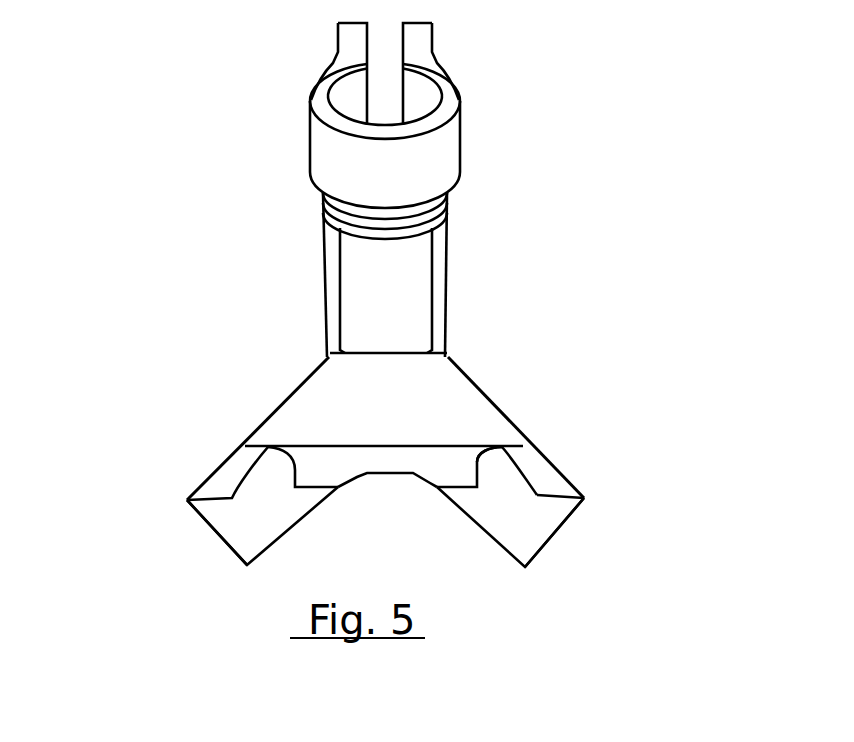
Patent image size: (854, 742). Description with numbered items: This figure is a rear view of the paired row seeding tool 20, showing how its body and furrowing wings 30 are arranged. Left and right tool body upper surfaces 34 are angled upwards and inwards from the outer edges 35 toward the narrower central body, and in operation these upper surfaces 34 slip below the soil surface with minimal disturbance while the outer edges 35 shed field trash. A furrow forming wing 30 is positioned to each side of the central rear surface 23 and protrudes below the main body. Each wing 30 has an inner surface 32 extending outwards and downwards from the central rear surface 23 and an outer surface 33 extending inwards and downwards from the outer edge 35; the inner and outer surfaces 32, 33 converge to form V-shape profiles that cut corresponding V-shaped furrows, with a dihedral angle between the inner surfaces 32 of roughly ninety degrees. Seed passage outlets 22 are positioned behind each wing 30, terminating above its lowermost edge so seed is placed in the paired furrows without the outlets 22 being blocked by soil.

The paired row seeding tool 20 is at (207, 177).
The outlets 22 is at (499, 447).
The central rear surface 23 is at (369, 480).
The furrowing wing 30 is at (242, 534).
The inner surface 32 is at (300, 523).
The outer surface 33 is at (238, 550).
The tool body upper surfaces 34 is at (290, 403).
The outer edges 35 is at (187, 500).